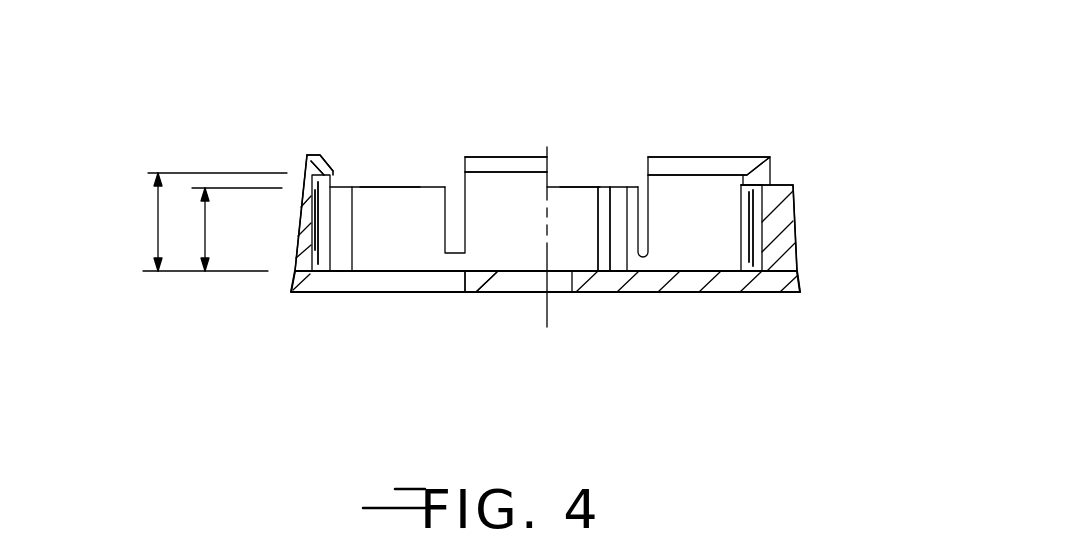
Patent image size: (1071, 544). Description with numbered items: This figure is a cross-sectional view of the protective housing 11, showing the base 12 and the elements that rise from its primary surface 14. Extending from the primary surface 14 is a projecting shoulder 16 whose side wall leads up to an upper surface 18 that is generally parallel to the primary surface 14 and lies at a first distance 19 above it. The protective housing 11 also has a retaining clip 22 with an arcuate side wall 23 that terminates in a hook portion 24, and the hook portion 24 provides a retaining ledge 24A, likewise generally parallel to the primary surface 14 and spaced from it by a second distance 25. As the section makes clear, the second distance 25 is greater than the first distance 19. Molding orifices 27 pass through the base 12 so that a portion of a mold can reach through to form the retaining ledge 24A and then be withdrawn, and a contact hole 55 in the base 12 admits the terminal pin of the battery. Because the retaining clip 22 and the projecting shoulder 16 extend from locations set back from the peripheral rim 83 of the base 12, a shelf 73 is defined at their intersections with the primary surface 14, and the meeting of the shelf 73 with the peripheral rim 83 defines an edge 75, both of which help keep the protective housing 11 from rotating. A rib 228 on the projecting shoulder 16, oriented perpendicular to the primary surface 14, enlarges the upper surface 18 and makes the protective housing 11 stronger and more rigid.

The protective housing 11 is at (707, 320).
The base 12 is at (600, 285).
The primary surface 14 is at (393, 268).
The projecting shoulder 16 is at (399, 225).
The upper surface 18 is at (385, 187).
The first distance 19 is at (203, 228).
The retaining clip 22 is at (301, 208).
The arcuate side wall 23 is at (473, 183).
The hook portion 24 is at (332, 161).
The retaining ledge 24A is at (333, 177).
The second distance 25 is at (157, 223).
The molding orifice 27 is at (320, 283).
The contact hole 55 is at (527, 282).
The shelf 73 is at (293, 268).
The edge 75 is at (291, 274).
The peripheral rim 83 is at (292, 282).
The rib 228 is at (603, 185).